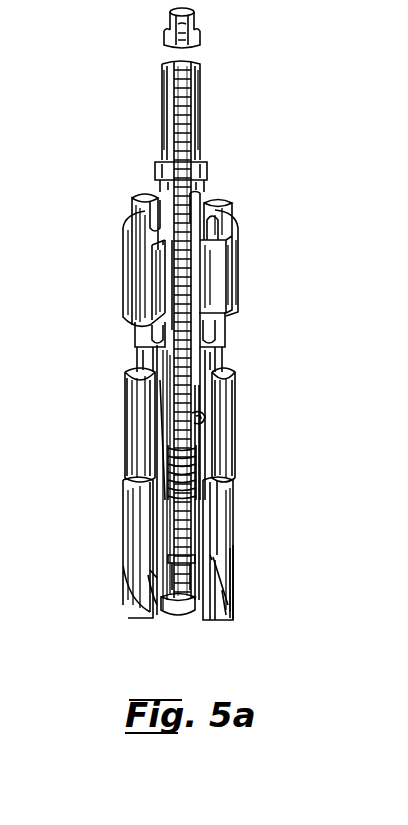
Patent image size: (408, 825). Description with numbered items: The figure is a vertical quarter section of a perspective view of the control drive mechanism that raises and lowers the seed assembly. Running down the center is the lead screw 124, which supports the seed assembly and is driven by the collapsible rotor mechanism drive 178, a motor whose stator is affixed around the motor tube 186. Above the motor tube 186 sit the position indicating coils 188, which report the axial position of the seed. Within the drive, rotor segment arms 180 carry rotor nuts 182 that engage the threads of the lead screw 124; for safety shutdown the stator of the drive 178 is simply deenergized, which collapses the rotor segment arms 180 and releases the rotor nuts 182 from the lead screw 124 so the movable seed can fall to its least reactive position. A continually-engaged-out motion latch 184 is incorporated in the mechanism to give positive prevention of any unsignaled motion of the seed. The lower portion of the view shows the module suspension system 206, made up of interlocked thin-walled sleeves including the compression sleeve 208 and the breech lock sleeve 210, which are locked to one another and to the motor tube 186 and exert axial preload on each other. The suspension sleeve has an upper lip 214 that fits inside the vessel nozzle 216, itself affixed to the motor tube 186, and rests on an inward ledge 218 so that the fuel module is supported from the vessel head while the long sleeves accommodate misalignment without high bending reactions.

The position indicating coils 188 is at (188, 90).
The lead screw 124 is at (188, 156).
The collapsible rotor mechanism drive 178 is at (135, 268).
The motor tube 186 is at (210, 359).
The continually-engaged-out motion latch 184 is at (198, 417).
The rotor nuts 182 is at (187, 452).
The rotor segment arms 180 is at (228, 483).
The module suspension system 206 is at (150, 528).
The compression sleeve 208 is at (158, 578).
The breech lock sleeve 210 is at (147, 613).
The vessel nozzle 216 is at (233, 553).
The upper lip 214 is at (211, 562).
The inward ledge 218 is at (222, 596).